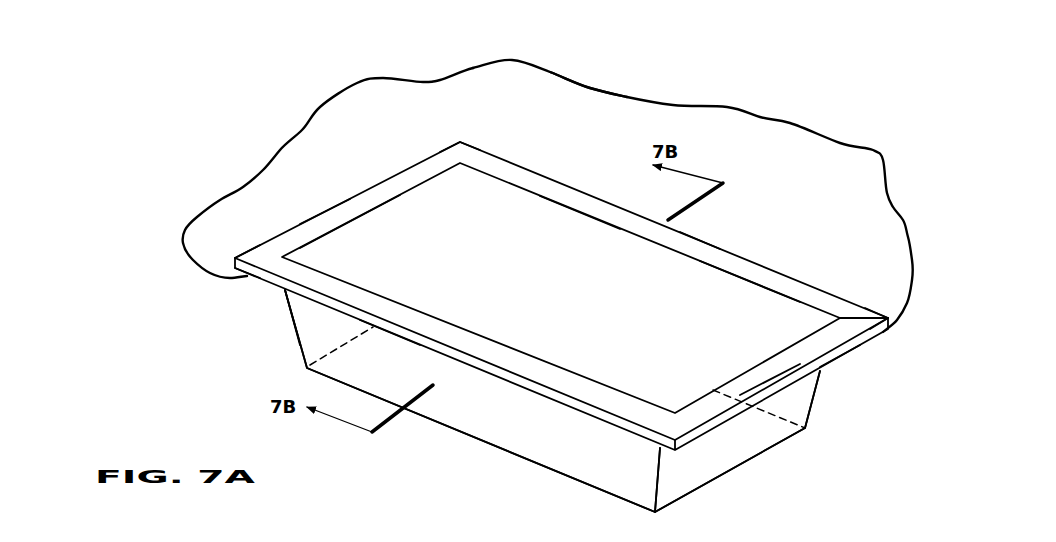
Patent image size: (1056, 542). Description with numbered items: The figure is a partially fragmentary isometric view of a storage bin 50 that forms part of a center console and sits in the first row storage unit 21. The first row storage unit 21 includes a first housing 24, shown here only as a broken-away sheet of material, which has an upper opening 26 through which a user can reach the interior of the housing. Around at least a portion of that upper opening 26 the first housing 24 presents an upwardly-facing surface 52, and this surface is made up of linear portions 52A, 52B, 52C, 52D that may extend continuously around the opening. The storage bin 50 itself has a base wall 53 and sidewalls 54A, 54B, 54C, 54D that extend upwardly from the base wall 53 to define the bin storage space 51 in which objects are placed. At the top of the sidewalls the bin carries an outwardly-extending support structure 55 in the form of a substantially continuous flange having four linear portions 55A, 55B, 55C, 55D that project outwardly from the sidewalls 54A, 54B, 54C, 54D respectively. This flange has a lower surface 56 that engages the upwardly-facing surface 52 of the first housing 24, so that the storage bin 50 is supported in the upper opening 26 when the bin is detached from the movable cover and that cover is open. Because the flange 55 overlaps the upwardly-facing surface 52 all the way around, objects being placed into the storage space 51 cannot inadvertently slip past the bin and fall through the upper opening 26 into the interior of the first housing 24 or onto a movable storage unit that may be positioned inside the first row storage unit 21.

The first row storage unit 21 is at (512, 105).
The first housing 24 is at (383, 127).
The upper opening 26 is at (575, 133).
The storage bin 50 is at (700, 293).
The storage space 51 is at (747, 252).
The upwardly-facing surface 52 is at (247, 253).
The linear portion of upwardly-facing surface 52A is at (430, 147).
The linear portion of upwardly-facing surface 52B is at (700, 240).
The linear portion of upwardly-facing surface 52C is at (857, 327).
The linear portion of upwardly-facing surface 52D is at (300, 300).
The base wall 53 is at (609, 370).
The sidewall 54A is at (380, 247).
The sidewall 54B is at (790, 320).
The sidewall 54C is at (735, 438).
The sidewall 54D is at (477, 402).
The support structure 55 is at (850, 310).
The linear portion of flange 55A is at (327, 208).
The linear portion of flange 55B is at (575, 207).
The linear portion of flange 55C is at (773, 367).
The linear portion of flange 55D is at (420, 322).
The lower surface 56 is at (853, 350).